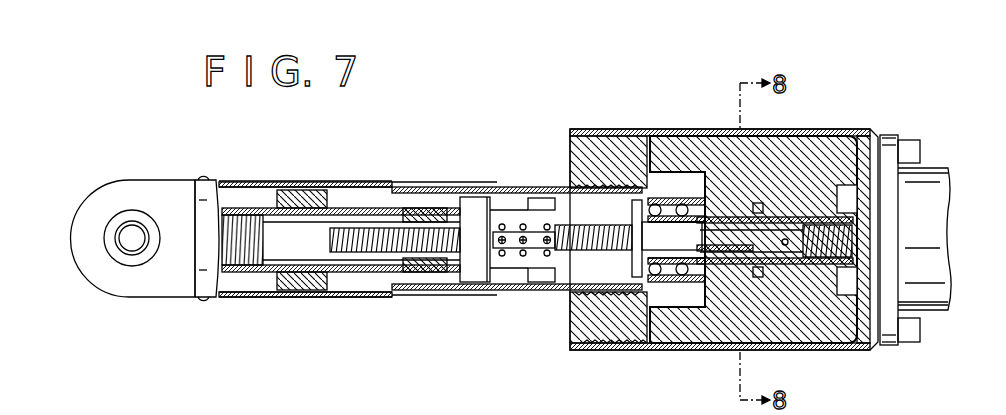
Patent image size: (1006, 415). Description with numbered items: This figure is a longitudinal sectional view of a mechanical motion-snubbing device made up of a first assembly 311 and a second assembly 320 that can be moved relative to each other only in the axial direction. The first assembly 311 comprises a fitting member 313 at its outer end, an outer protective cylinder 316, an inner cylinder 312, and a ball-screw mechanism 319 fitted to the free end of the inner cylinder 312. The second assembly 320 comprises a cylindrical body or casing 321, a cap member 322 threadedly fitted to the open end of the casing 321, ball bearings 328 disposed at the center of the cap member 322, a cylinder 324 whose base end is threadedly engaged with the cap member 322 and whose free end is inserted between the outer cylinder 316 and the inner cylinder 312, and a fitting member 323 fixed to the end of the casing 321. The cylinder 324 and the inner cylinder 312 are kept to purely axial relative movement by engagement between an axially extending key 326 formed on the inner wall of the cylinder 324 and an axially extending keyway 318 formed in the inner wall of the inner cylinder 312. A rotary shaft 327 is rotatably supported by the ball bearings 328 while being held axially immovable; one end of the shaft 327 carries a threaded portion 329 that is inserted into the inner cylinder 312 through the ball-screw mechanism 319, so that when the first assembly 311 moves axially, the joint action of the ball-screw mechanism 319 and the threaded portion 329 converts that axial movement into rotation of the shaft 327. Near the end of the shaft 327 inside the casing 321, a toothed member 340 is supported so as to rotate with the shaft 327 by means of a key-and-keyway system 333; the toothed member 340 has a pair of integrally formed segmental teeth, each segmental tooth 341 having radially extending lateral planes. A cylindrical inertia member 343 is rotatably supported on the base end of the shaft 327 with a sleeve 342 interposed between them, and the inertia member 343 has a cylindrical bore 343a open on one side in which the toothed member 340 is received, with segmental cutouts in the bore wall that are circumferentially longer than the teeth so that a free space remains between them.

The first assembly 311 is at (195, 309).
The inner cylinder 312 is at (266, 286).
The fitting member 313 is at (178, 198).
The outer protective cylinder 316 is at (296, 297).
The keyway 318 is at (505, 197).
The ball-screw mechanism 319 is at (519, 254).
The second assembly 320 is at (557, 321).
The casing 321 is at (657, 348).
The cap member 322 is at (585, 335).
The fitting member 323 is at (935, 257).
The cylinder 324 is at (537, 187).
The key 326 is at (392, 182).
The rotary shaft 327 is at (624, 226).
The ball bearings 328 is at (679, 198).
The threaded portion 329 is at (332, 240).
The key-and-keyway system 333 is at (744, 258).
The toothed member 340 is at (700, 224).
The segmental tooth 341 is at (722, 268).
The sleeve 342 is at (870, 218).
The cylindrical inertia member 343 is at (835, 134).
The cylindrical bore 343a is at (758, 134).